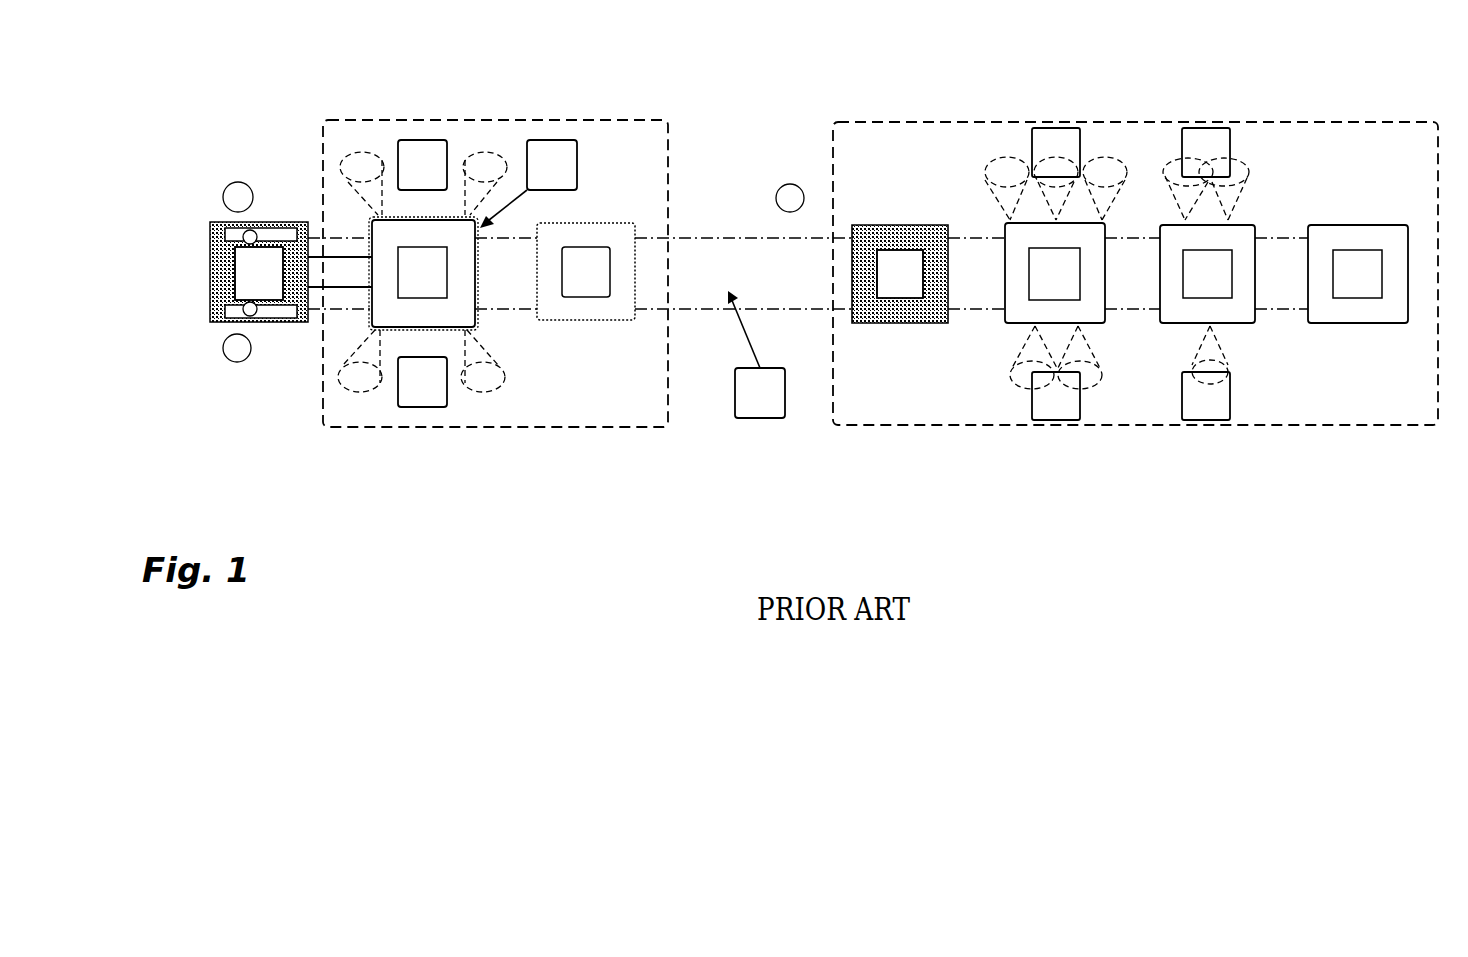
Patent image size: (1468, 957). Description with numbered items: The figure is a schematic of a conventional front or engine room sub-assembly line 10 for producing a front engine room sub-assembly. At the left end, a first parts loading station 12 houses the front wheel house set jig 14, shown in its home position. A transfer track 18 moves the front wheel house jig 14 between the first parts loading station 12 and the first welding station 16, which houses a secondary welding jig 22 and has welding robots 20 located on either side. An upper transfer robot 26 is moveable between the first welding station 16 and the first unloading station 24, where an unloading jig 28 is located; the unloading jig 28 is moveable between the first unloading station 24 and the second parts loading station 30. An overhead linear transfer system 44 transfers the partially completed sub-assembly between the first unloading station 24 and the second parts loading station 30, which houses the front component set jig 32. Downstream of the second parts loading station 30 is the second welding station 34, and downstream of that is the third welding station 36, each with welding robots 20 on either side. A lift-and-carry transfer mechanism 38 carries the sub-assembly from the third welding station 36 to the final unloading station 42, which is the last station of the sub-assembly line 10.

The front or engine room sub-assembly line 10 is at (254, 126).
The first parts loading station 12 is at (300, 222).
The front wheel house set jig 14 is at (259, 273).
The first welding station 16 is at (480, 320).
The transfer track 18 is at (323, 310).
The welding robots 20 is at (793, 274).
The secondary welding jig 22 is at (422, 272).
The first unloading station 24 is at (625, 222).
The upper transfer robot 26 is at (528, 184).
The unloading jig 28 is at (586, 272).
The second parts loading station 30 is at (927, 225).
The front component set jig 32 is at (900, 274).
The second welding station 34 is at (1003, 318).
The third welding station 36 is at (1245, 325).
The lift-and-carry transfer mechanism 38 is at (1282, 237).
The final unloading station 42 is at (1367, 325).
The overhead linear transfer system 44 is at (756, 354).